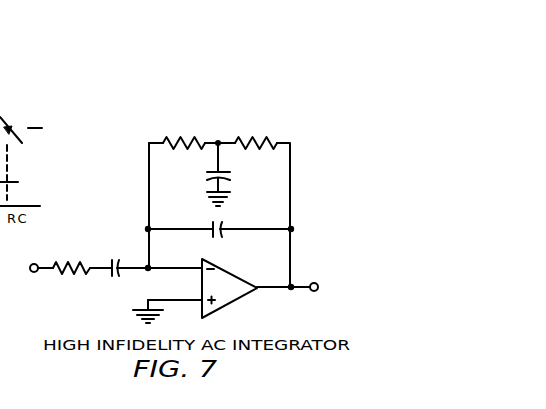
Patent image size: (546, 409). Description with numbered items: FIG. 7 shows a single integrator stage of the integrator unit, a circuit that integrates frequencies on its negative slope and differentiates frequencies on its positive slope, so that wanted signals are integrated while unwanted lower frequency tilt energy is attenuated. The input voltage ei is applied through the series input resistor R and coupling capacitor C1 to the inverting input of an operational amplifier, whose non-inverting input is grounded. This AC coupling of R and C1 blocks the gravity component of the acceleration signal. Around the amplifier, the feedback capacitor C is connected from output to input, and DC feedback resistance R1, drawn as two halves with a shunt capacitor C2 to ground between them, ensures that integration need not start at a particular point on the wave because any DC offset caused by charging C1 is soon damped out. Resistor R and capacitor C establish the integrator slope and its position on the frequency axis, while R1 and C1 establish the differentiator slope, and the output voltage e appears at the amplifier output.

The DC feedback resistor R1 is at (220, 122).
The shunt capacitor 1/zeta^2 C C2 is at (260, 175).
The feedback capacitor C is at (225, 236).
The input resistor R is at (71, 276).
The coupling capacitor C1 is at (118, 281).
The input voltage ei is at (22, 272).
The output voltage e is at (324, 290).